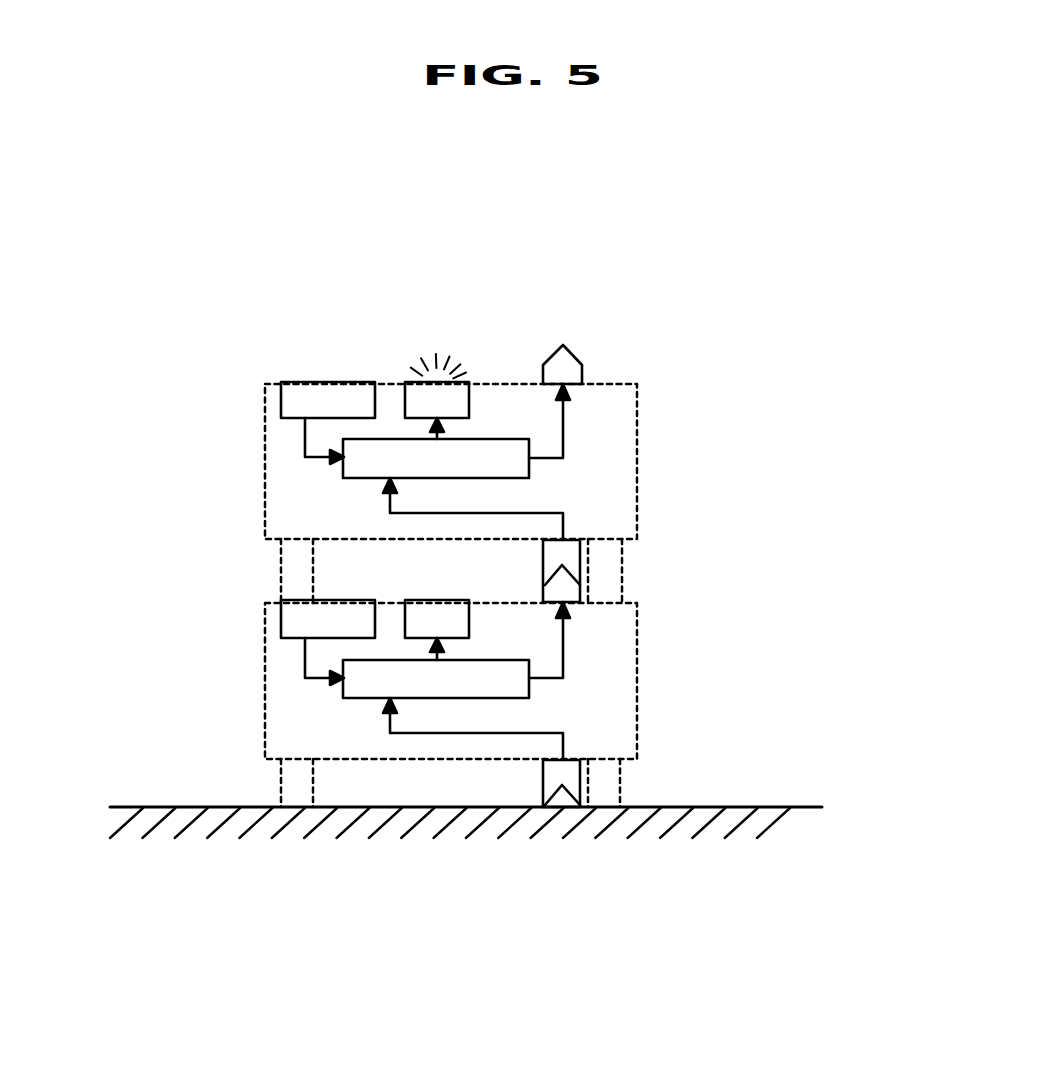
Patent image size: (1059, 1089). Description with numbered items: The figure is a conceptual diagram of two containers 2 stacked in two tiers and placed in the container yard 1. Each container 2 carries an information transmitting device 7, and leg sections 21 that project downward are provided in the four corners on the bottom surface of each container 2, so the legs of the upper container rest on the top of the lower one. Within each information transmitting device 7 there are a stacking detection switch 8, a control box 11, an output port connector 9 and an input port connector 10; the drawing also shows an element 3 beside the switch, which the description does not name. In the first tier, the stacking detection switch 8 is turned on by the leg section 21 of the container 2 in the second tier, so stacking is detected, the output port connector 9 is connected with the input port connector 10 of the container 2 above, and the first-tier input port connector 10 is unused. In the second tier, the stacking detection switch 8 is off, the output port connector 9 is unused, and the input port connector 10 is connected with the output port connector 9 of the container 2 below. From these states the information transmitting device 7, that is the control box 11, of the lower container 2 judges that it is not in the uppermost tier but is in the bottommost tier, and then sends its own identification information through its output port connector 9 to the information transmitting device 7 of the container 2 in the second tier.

The container yard 1 is at (775, 806).
The container 2 is at (265, 457).
The light emitting section 3 is at (462, 382).
The information transmitting device 7 is at (604, 456).
The stacking detection switch 8 is at (332, 382).
The output port connector 9 is at (573, 350).
The input port connector 10 is at (567, 562).
The control box 11 is at (358, 480).
The leg section 21 is at (280, 567).